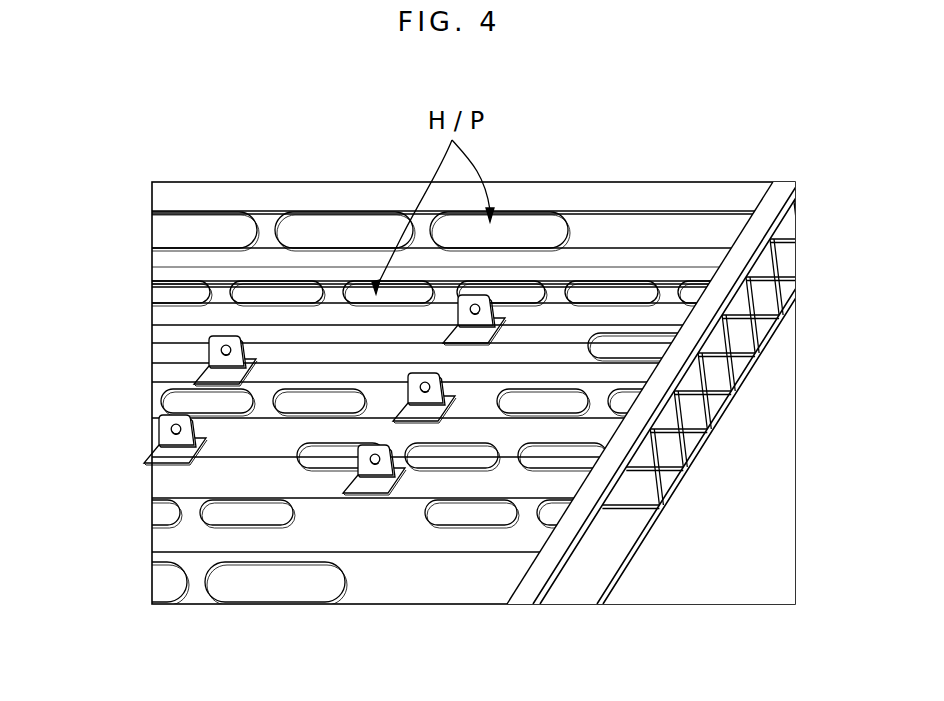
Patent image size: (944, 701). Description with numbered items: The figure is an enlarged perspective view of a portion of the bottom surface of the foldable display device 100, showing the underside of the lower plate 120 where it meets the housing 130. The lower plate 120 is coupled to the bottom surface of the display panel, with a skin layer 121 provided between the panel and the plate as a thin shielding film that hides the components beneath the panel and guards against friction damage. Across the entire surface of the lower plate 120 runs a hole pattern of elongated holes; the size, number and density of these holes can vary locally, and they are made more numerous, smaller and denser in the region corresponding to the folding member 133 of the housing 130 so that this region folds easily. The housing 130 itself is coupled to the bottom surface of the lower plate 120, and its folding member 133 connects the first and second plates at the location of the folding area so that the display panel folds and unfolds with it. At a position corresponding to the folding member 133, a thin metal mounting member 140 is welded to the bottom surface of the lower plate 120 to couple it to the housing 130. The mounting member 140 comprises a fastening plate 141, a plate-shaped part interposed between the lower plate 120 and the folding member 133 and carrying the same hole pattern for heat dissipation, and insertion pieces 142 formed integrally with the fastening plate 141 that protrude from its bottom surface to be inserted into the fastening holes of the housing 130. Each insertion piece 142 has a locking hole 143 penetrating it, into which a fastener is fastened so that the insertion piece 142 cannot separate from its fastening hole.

The foldable display device 100 is at (92, 88).
The lower plate 120 is at (419, 588).
The skin layer 121 is at (283, 588).
The housing 130 is at (607, 541).
The folding member 133 is at (754, 353).
The mounting member 140 is at (76, 350).
The fastening plate 141 is at (165, 352).
The insertion piece 142 is at (162, 420).
The locking hole 143 is at (168, 441).